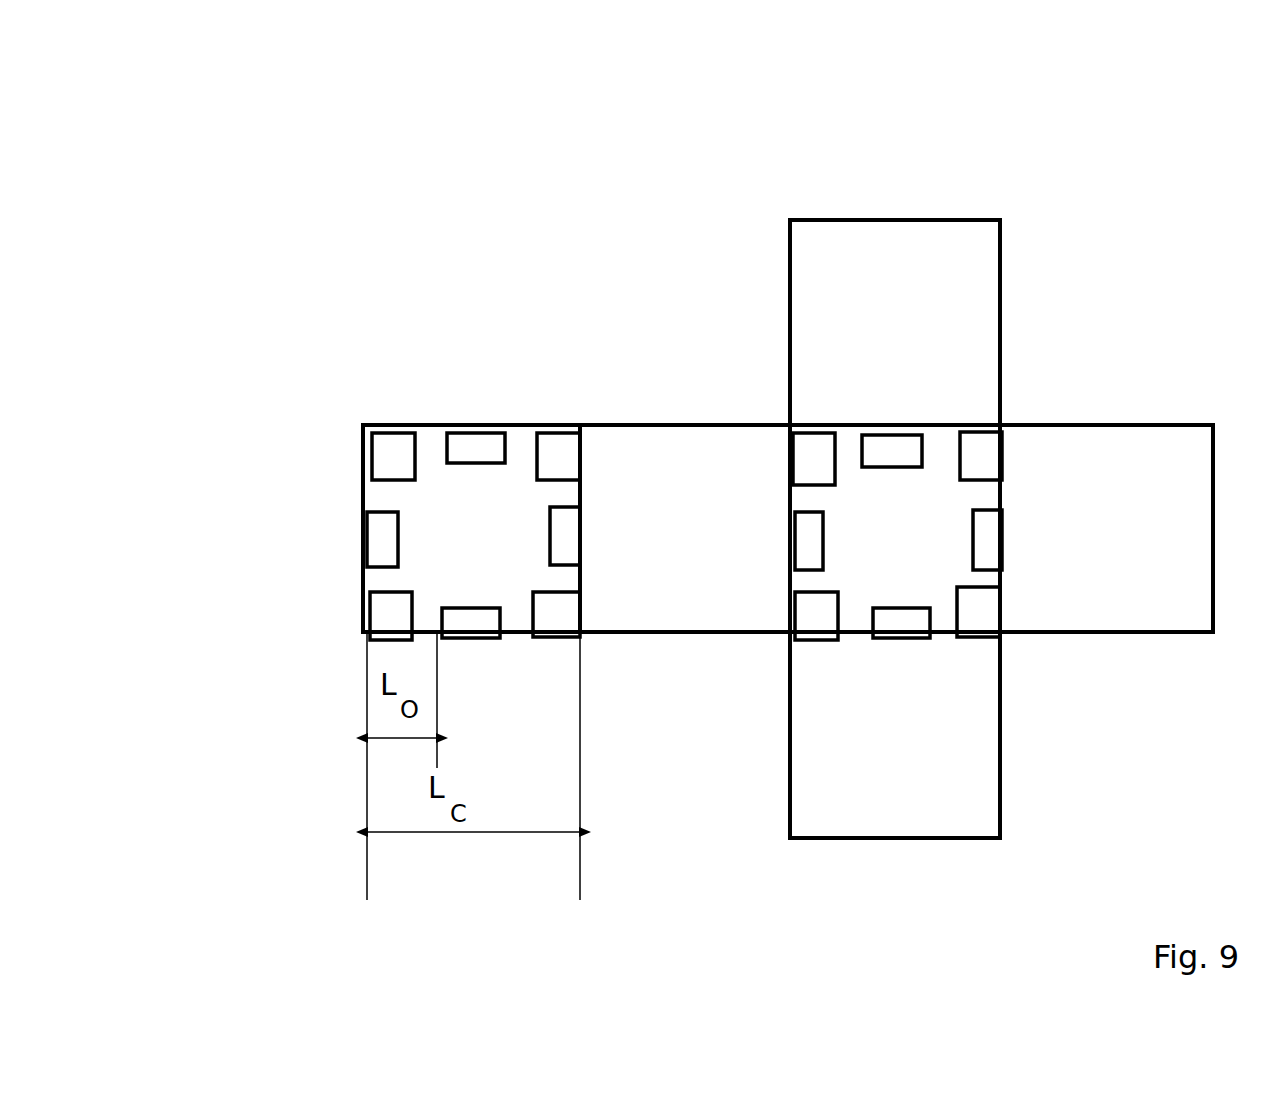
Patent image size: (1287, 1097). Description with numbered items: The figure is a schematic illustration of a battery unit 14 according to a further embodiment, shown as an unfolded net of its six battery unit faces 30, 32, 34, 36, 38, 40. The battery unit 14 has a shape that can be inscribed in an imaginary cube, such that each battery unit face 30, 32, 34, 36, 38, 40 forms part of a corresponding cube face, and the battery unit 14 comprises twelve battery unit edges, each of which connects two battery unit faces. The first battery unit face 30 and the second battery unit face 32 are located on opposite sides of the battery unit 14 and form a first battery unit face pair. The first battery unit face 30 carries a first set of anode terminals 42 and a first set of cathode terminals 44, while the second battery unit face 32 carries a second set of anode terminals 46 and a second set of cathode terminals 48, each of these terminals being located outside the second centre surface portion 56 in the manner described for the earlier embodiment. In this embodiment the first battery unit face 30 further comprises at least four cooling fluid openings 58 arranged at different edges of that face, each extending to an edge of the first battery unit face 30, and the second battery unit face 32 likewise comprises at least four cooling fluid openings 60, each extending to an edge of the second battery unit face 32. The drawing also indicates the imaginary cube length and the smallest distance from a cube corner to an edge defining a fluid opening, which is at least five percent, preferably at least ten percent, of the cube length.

The battery unit 14 is at (493, 265).
The first battery unit face 30 is at (911, 559).
The second battery unit face 32 is at (512, 559).
The battery unit face 34 is at (888, 386).
The battery unit face 36 is at (886, 726).
The battery unit face 38 is at (690, 559).
The battery unit face 40 is at (1065, 559).
The first set of anode terminals 42 is at (1005, 443).
The first set of cathode terminals 44 is at (1002, 634).
The second set of anode terminals 46 is at (552, 442).
The second set of cathode terminals 48 is at (382, 437).
The second centre surface portion 56 is at (872, 638).
The cooling fluid openings 58 is at (983, 540).
The cooling fluid openings 60 is at (557, 527).